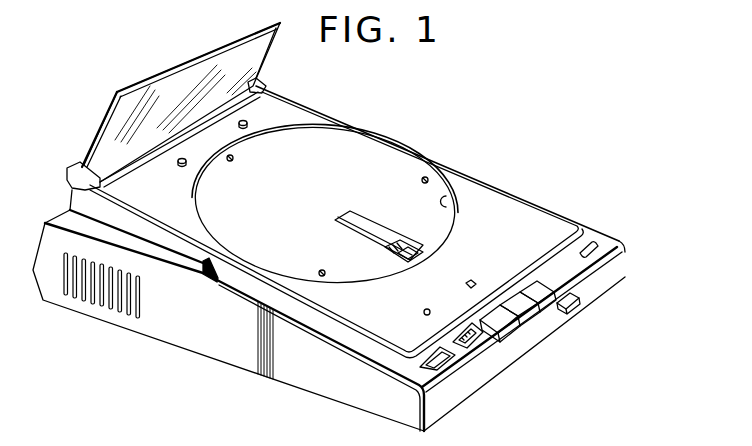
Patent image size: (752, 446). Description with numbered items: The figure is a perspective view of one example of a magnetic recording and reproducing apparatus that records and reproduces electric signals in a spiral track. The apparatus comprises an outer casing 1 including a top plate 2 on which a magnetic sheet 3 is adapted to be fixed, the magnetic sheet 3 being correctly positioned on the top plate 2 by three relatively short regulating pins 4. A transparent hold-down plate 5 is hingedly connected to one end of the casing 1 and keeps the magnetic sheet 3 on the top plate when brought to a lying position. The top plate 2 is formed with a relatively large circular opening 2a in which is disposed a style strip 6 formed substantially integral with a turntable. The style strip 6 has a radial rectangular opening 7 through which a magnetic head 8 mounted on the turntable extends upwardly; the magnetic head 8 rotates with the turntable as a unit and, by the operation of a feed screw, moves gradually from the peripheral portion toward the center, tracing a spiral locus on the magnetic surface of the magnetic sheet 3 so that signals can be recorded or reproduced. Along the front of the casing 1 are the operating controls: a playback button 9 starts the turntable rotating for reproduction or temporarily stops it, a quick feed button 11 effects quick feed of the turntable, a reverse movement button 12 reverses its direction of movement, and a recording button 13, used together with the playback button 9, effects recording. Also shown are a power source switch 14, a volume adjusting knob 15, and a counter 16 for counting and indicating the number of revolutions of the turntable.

The outer casing 1 is at (207, 356).
The top plate 2 is at (113, 167).
The circular opening 2a is at (450, 204).
The magnetic sheet 3 is at (293, 104).
The regulating pins 4 is at (248, 122).
The transparent hold-down plate 5 is at (108, 110).
The style strip 6 is at (368, 145).
The radial rectangular opening 7 is at (343, 225).
The magnetic head 8 is at (412, 246).
The playback button 9 is at (537, 307).
The quick feed button 11 is at (549, 303).
The reverse movement button 12 is at (513, 331).
The recording button 13 is at (578, 299).
The power source switch 14 is at (427, 358).
The volume adjusting knob 15 is at (470, 326).
The counter 16 is at (598, 242).